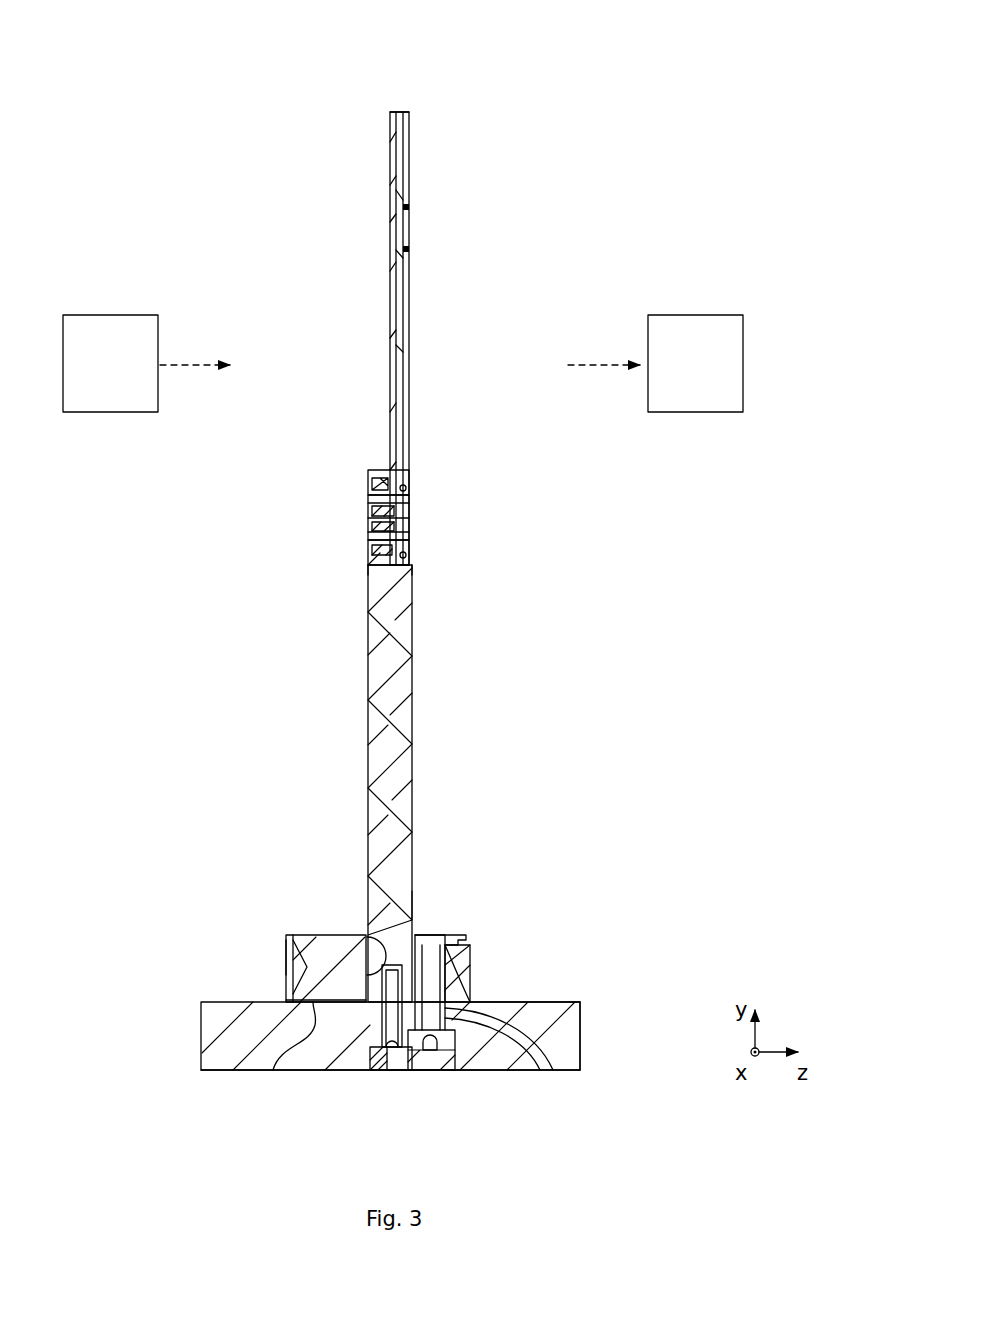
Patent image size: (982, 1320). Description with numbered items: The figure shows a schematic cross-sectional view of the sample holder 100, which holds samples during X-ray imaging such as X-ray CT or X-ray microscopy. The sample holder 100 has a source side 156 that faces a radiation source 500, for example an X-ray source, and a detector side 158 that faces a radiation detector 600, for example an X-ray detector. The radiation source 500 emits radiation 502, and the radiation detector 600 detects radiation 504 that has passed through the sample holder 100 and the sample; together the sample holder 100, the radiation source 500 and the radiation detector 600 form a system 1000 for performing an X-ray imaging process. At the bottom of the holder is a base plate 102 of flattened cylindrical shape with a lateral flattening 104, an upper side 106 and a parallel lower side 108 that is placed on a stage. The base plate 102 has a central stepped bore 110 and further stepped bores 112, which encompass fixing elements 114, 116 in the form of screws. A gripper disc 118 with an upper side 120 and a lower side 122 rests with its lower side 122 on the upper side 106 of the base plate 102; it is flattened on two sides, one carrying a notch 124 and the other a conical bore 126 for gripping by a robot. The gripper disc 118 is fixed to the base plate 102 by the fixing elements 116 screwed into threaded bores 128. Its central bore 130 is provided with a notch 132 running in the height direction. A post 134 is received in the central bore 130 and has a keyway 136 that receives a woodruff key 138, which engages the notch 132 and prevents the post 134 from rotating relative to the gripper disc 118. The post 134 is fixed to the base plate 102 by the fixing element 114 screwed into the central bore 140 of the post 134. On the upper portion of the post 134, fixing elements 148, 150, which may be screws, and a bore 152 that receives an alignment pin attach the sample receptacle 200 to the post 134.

The system 1000 is at (352, 78).
The sample holder 100 is at (447, 124).
The sample receptacle 200 is at (389, 215).
The radiation source 500 is at (110, 315).
The radiation detector 600 is at (694, 315).
The radiation 502 is at (213, 370).
The radiation 504 is at (618, 370).
The source side 156 is at (342, 312).
The detector side 158 is at (458, 312).
The fixing element 148 is at (410, 492).
The fixing element 150 is at (410, 548).
The bore 152 is at (368, 527).
The post 134 is at (360, 675).
The keyway 136 is at (412, 935).
The central bore 130 is at (448, 945).
The notch 124 is at (483, 950).
The threaded bore 128 is at (472, 990).
The central bore 140 is at (470, 1000).
The upper side 120 is at (295, 934).
The key 138 is at (365, 940).
The gripper disc 118 is at (280, 957).
The conical bore 126 is at (300, 967).
The notch 132 is at (285, 999).
The base plate 102 is at (193, 1042).
The upper side 106 is at (548, 1001).
The lateral flattening 104 is at (581, 1012).
The lower side 108 is at (497, 1071).
The stepped bore 110 is at (552, 1070).
The stepped bore 112 is at (540, 1072).
The lower side 122 is at (274, 1071).
The fixing element 114 is at (378, 1071).
The fixing element 116 is at (432, 1071).